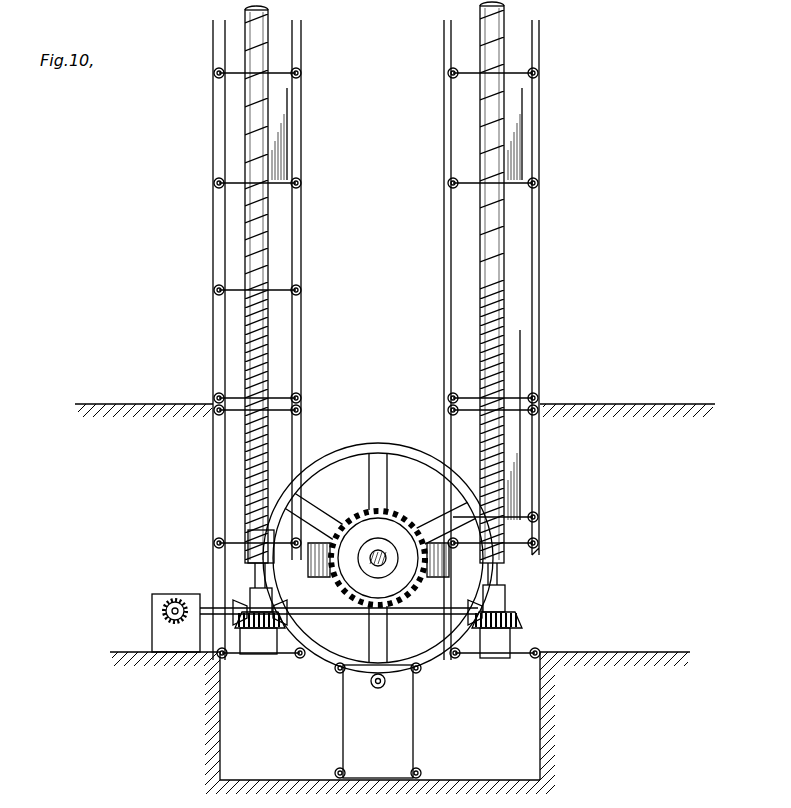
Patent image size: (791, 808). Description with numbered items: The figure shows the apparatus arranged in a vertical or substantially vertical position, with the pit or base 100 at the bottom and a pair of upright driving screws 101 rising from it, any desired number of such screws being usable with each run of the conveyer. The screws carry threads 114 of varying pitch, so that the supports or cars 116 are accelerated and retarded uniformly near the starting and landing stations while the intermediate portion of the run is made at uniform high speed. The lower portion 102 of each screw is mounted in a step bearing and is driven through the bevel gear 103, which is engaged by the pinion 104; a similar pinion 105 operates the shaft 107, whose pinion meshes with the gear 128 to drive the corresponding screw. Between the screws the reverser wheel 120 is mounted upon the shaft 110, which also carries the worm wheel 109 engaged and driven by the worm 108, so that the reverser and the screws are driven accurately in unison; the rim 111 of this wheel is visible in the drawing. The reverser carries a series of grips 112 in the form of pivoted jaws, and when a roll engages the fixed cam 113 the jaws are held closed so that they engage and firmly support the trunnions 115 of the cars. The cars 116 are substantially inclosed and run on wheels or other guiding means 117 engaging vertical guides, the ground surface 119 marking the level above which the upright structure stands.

The pit 100 is at (453, 638).
The driving screw 101 is at (505, 11).
The lower portion of the screw 102 is at (252, 589).
The bevel gear 103 is at (241, 627).
The pinion 104 is at (233, 603).
The pinion 105 is at (298, 641).
The shaft 107 is at (437, 613).
The worm 108 is at (372, 620).
The worm wheel 109 is at (378, 558).
The shaft 110 is at (372, 556).
The wheel rim 111 is at (352, 451).
The grips 112 is at (383, 681).
The fixed cam 113 is at (356, 527).
The threads 114 is at (253, 562).
The trunnions 115 is at (248, 86).
The supports or cars 116 is at (531, 328).
The wheels or other guiding means 117 is at (451, 74).
The ground surface 119 is at (190, 403).
The pin 120 is at (380, 447).
The gear 128 is at (514, 622).